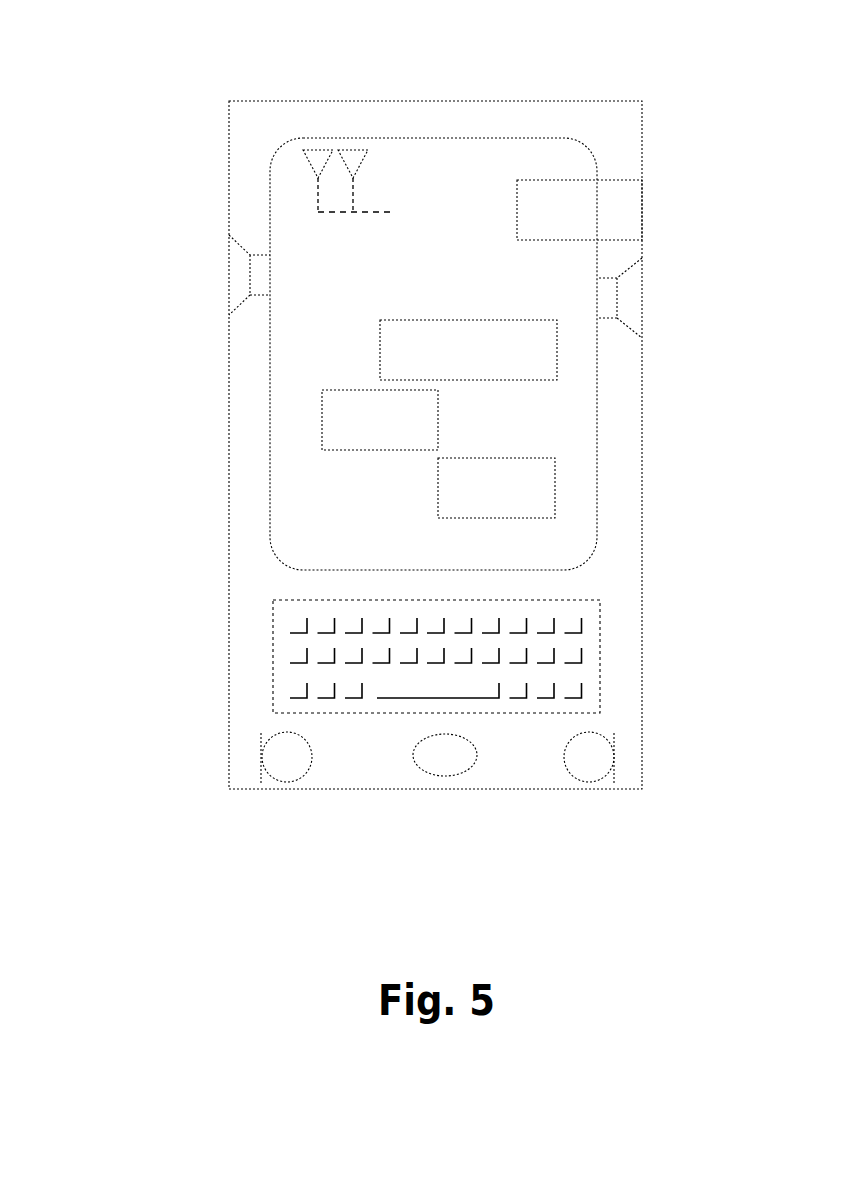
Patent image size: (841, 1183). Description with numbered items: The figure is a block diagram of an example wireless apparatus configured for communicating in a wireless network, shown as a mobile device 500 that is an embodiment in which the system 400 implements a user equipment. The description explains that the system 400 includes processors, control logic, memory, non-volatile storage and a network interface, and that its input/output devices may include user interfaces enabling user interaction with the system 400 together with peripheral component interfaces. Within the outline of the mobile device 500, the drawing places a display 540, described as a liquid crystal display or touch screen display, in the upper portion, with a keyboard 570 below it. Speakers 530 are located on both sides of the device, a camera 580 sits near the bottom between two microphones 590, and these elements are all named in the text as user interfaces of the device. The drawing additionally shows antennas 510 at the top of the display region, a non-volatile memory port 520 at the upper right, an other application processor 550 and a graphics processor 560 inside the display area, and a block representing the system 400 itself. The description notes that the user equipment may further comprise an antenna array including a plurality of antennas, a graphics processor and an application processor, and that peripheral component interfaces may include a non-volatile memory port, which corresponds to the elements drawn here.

The mobile device 500 is at (157, 55).
The antennas 510 is at (353, 150).
The non-volatile memory port 520 is at (642, 202).
The speaker 530 is at (229, 280).
The display 540 is at (597, 500).
The other application processor 550 is at (497, 380).
The graphics processor 560 is at (358, 450).
The system 400 is at (496, 488).
The keyboard 570 is at (570, 600).
The camera 580 is at (421, 770).
The microphone 590 is at (280, 782).